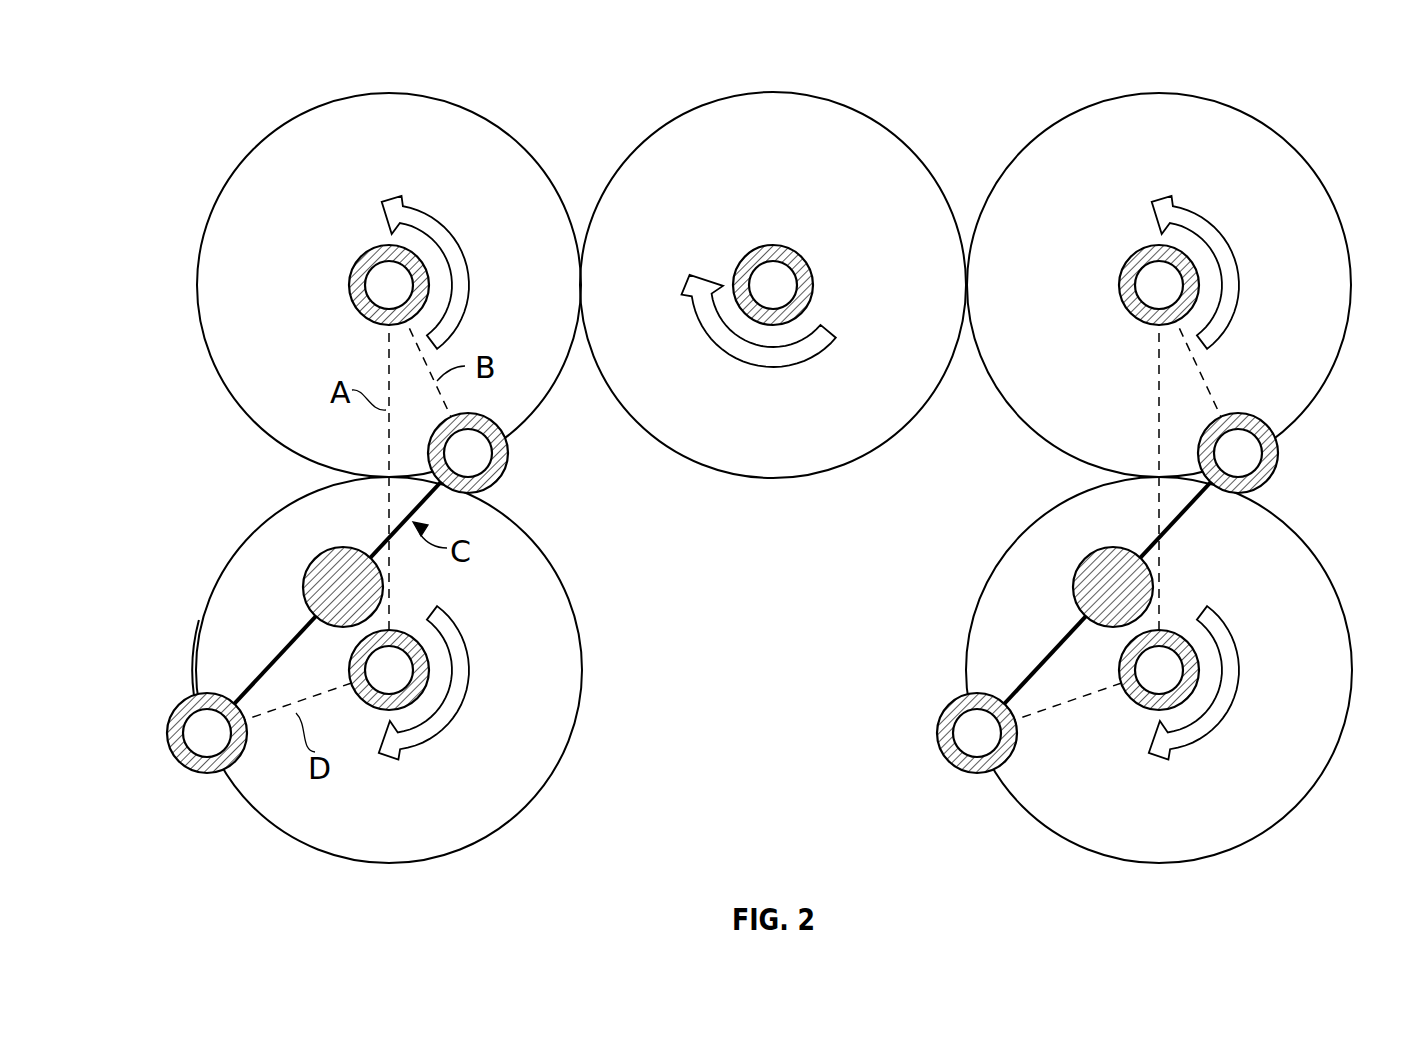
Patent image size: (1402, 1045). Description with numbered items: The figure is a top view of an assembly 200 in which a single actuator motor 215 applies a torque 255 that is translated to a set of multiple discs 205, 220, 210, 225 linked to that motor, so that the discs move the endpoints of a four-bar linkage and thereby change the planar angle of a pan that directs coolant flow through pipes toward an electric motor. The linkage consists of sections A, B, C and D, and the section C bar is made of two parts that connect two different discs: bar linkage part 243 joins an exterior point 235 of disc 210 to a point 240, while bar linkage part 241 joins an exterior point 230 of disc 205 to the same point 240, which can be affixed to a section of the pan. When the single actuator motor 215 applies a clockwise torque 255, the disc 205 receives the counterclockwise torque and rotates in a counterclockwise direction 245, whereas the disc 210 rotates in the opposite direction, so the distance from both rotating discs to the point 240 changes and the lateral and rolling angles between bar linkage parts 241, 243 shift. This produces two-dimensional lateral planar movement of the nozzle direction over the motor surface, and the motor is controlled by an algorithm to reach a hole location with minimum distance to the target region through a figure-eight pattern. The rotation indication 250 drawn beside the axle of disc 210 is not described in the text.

The assembly 200 is at (1287, 77).
The disc 205 is at (538, 162).
The disc 210 is at (538, 550).
The single actuator motor 215 is at (921, 162).
The disc 220 is at (1306, 162).
The disc 225 is at (1295, 538).
The exterior point of disc 205 230 is at (507, 460).
The exterior point of disc 210 235 is at (177, 708).
The point 240 is at (307, 568).
The bar linkage part 241 is at (325, 522).
The bar linkage part 243 is at (198, 656).
The counterclockwise direction 245 is at (351, 273).
The axle of second roller 250 is at (445, 727).
The torque 255 is at (801, 258).